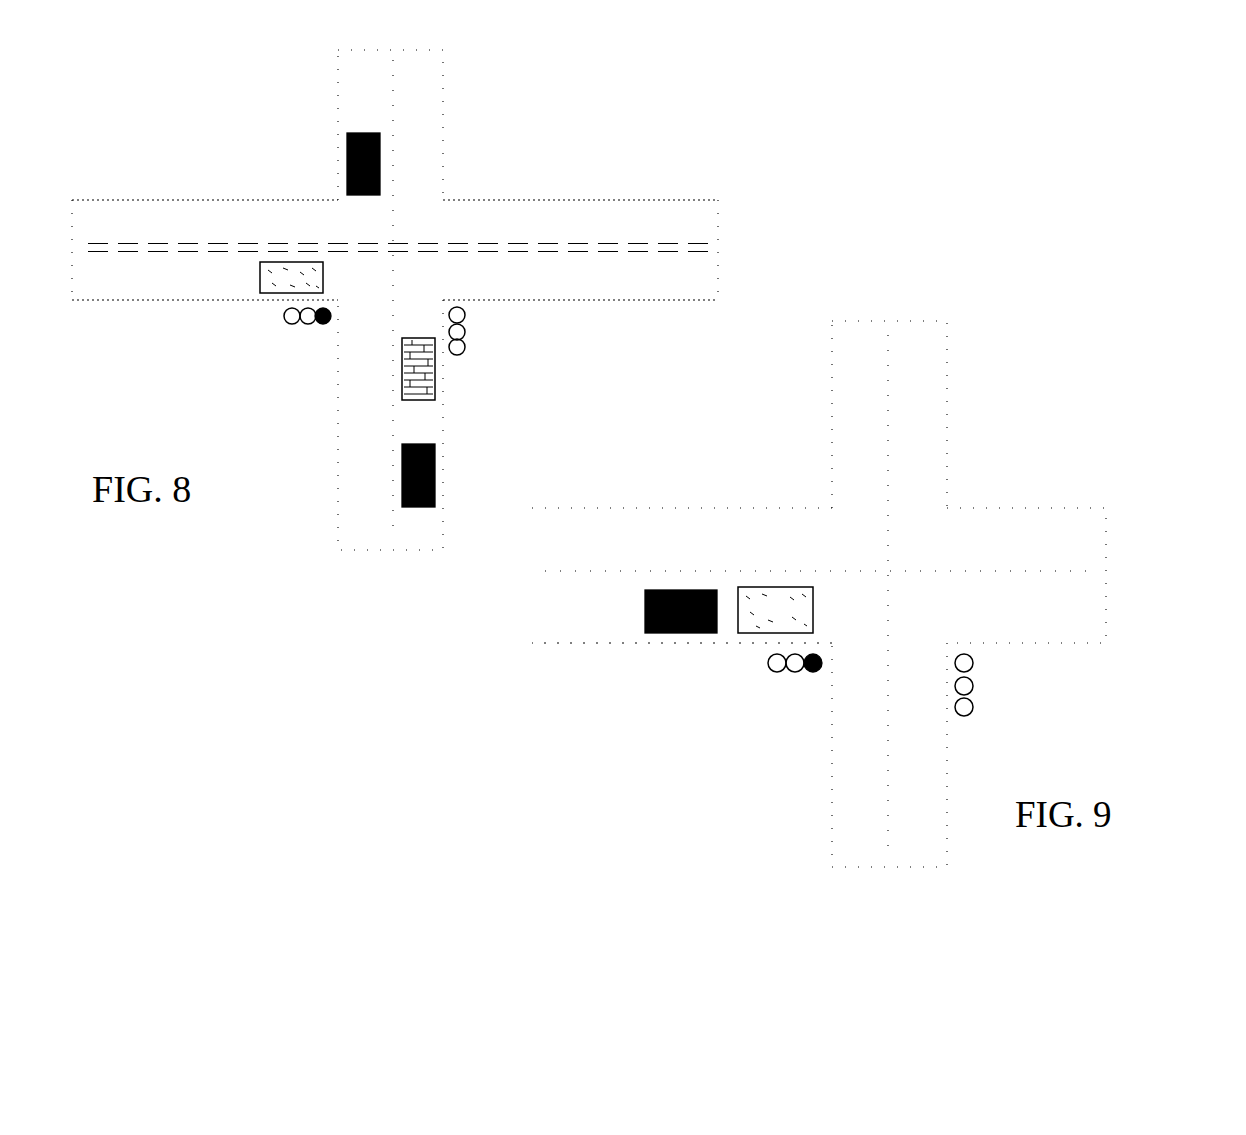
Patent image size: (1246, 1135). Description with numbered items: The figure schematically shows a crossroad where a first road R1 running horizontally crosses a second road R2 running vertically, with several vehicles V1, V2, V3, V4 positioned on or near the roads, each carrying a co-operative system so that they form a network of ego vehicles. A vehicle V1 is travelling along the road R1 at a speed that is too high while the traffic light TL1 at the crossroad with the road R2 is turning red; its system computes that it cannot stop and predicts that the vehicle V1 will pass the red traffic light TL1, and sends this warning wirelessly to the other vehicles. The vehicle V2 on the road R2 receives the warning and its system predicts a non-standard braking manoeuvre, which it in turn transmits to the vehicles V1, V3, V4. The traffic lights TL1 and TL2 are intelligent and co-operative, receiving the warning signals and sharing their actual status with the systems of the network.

In FIG. 8, the road R1 is at (724, 252).
In FIG. 9, the road R1 is at (1109, 577).
In FIG. 8, the road R2 is at (389, 555).
In FIG. 9, the road R2 is at (886, 869).
In FIG. 8, the vehicle V1 is at (276, 286).
In FIG. 9, the vehicle V1 is at (772, 610).
In FIG. 8, the vehicle V2 is at (435, 375).
In FIG. 9, the vehicle V2 is at (681, 606).
In FIG. 8, the vehicle V3 is at (354, 157).
In FIG. 8, the vehicle V4 is at (436, 459).
In FIG. 8, the traffic light TL1 is at (299, 327).
In FIG. 9, the traffic light TL1 is at (782, 684).
In FIG. 8, the traffic light TL2 is at (478, 331).
In FIG. 9, the traffic light TL2 is at (984, 682).